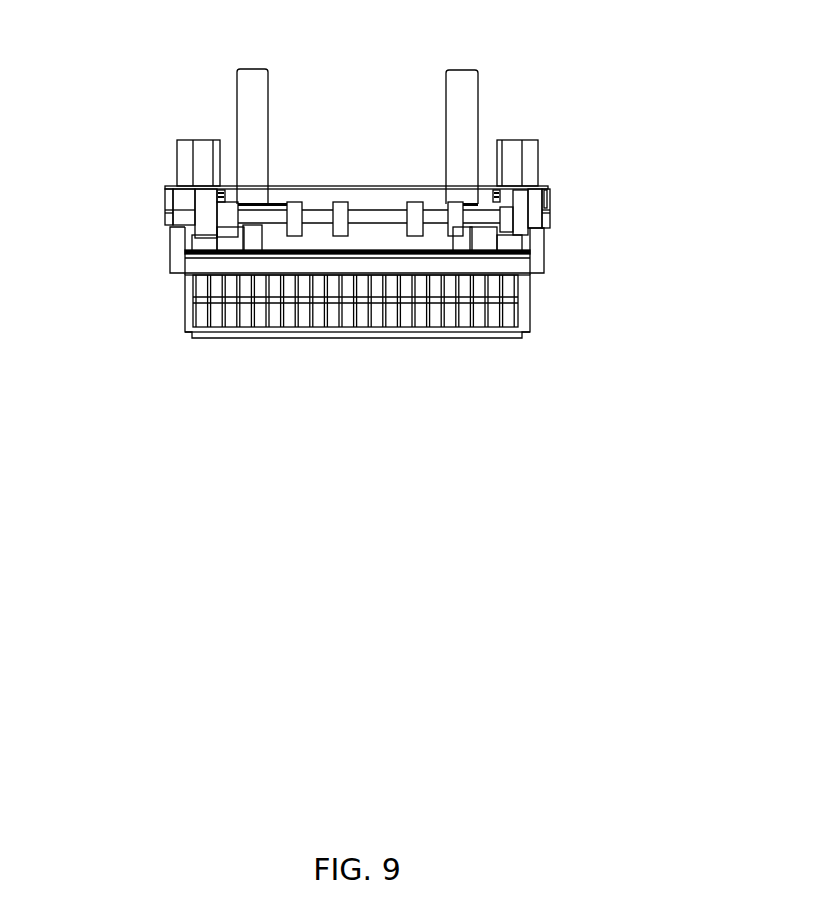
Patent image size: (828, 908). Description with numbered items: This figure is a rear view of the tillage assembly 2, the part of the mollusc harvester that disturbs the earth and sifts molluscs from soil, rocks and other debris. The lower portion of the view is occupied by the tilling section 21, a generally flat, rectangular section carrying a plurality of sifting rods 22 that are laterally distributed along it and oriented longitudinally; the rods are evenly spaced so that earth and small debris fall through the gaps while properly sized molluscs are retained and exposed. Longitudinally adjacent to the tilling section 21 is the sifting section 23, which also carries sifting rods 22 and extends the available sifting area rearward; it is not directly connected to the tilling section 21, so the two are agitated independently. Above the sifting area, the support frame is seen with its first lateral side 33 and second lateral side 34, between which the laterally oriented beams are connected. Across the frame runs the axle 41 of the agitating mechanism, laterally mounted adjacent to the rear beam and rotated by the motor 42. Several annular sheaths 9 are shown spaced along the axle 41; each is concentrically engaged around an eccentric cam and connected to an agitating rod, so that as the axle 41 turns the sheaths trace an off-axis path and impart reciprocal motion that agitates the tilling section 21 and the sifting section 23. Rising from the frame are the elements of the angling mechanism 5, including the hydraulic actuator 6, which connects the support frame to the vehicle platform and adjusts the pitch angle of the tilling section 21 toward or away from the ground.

The tillage assembly 2 is at (481, 472).
The angling mechanism 5 is at (236, 51).
The hydraulic actuator 6 is at (260, 98).
The annular sheath 9 is at (297, 208).
The tilling section 21 is at (370, 344).
The sifting rods 22 is at (265, 322).
The sifting section 23 is at (570, 247).
The first lateral side 33 is at (165, 160).
The second lateral side 34 is at (575, 158).
The axle 41 is at (365, 218).
The motor 42 is at (227, 228).